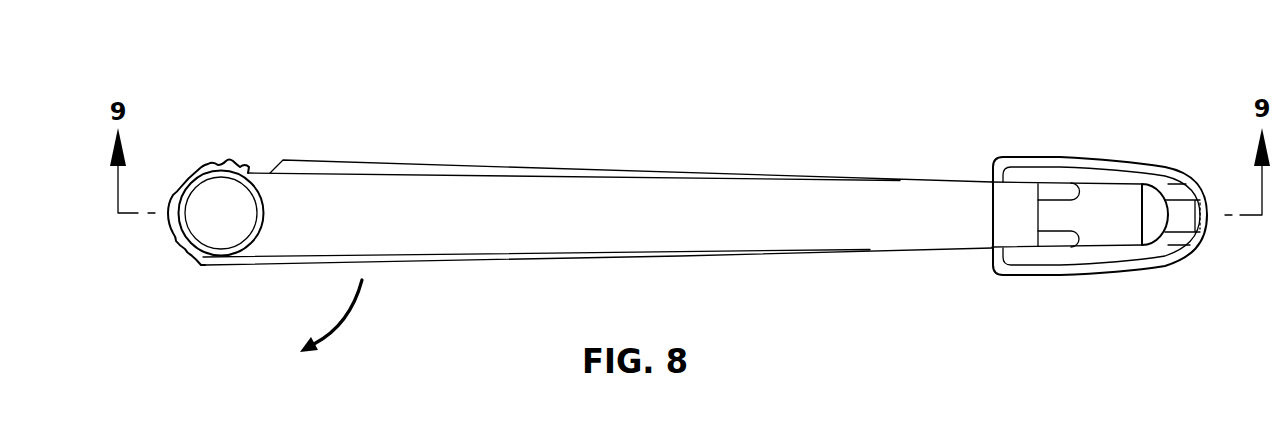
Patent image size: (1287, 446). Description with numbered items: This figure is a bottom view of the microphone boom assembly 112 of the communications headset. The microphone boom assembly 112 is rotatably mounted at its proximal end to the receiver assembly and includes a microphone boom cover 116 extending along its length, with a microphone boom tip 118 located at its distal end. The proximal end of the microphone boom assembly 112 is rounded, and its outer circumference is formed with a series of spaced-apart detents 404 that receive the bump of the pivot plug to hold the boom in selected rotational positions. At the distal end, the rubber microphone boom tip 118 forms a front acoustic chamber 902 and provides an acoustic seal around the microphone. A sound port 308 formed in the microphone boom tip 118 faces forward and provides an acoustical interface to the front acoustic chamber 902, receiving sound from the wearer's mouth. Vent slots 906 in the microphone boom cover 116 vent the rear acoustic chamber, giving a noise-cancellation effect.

The microphone boom assembly 112 is at (428, 139).
The microphone boom cover 116 is at (703, 190).
The microphone boom tip 118 is at (1072, 175).
The sound port 308 is at (1206, 216).
The detents 404 is at (233, 160).
The front acoustic chamber 902 is at (1183, 212).
The vent slots 906 is at (1063, 240).